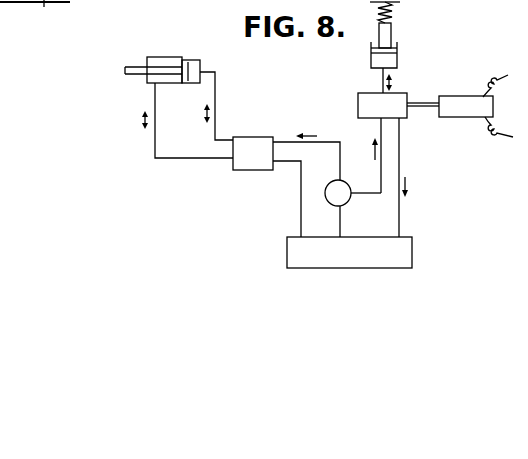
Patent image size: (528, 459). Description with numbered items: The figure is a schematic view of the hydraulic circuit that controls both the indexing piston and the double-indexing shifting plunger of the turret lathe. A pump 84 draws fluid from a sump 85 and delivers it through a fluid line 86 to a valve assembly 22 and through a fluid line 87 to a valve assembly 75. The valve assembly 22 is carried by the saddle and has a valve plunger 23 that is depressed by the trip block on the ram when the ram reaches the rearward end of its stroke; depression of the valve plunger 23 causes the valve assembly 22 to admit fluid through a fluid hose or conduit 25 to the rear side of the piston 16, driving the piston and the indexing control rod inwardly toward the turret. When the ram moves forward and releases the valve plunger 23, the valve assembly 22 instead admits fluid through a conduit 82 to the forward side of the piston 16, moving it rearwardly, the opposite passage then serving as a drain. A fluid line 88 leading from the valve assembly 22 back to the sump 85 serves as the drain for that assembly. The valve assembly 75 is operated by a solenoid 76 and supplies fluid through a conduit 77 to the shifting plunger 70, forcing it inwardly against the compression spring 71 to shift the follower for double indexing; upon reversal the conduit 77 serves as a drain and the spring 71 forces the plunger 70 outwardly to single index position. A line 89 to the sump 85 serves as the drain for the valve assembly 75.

The piston 16 is at (187, 59).
The valve assembly 22 is at (239, 172).
The valve plunger 23 is at (35, 13).
The fluid hose or conduit 25 is at (218, 92).
The shifting plunger 70 is at (398, 53).
The compression spring 71 is at (393, 15).
The valve assembly 75 is at (357, 100).
The solenoid 76 is at (461, 93).
The conduit 77 is at (382, 78).
The conduit 82 is at (188, 160).
The pump 84 is at (348, 200).
The sump 85 is at (287, 243).
The fluid line 86 is at (339, 142).
The fluid line 87 is at (400, 138).
The fluid line 88 is at (301, 198).
The line 89 is at (401, 203).